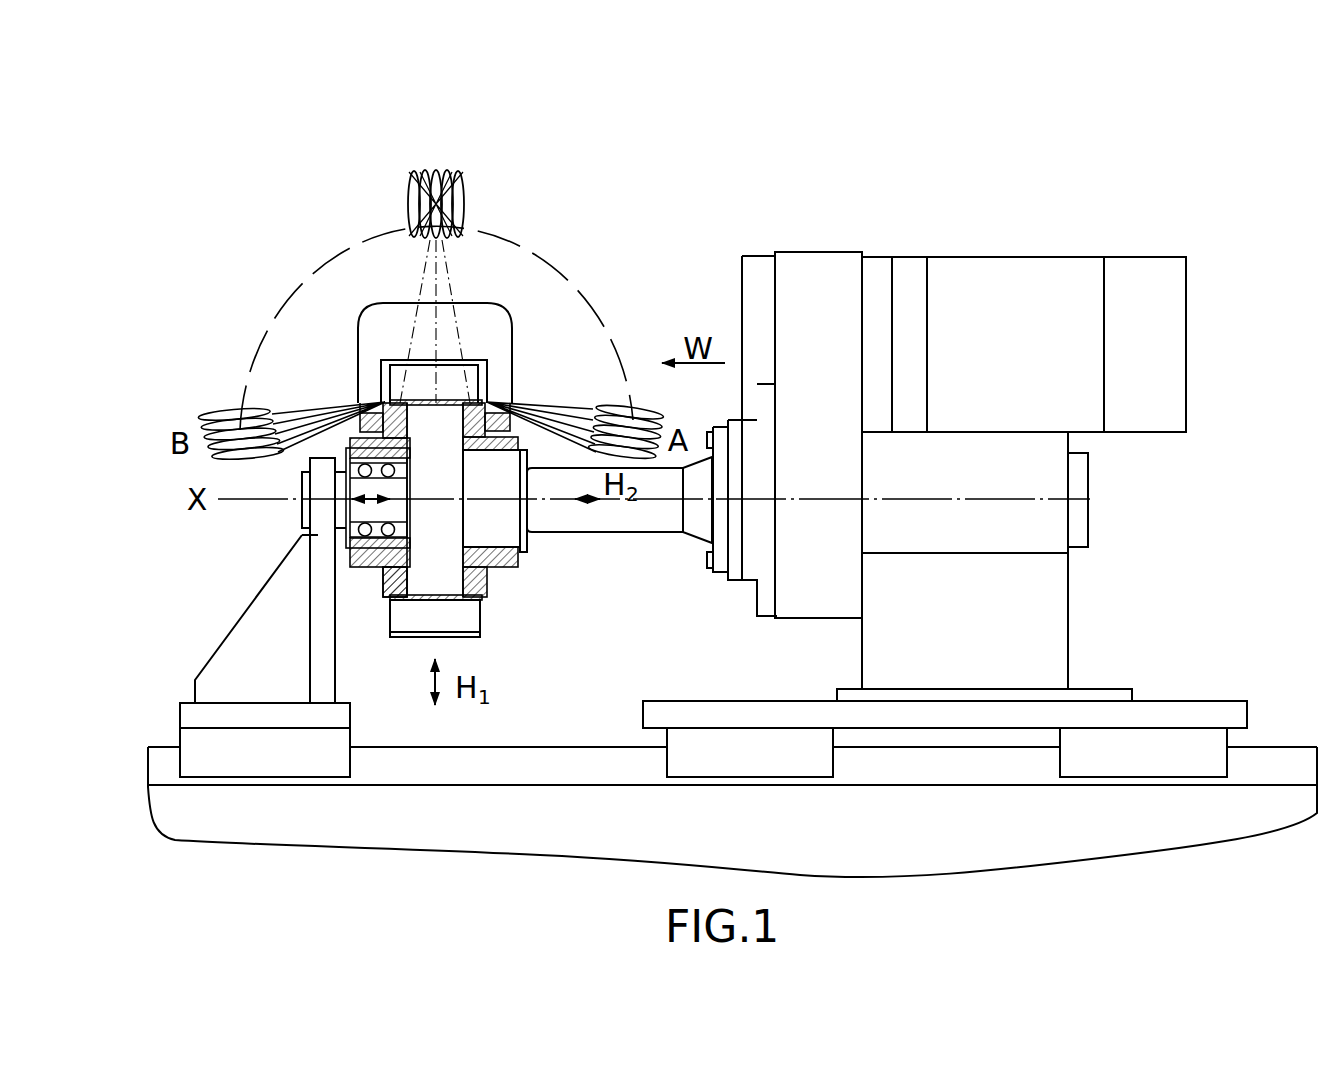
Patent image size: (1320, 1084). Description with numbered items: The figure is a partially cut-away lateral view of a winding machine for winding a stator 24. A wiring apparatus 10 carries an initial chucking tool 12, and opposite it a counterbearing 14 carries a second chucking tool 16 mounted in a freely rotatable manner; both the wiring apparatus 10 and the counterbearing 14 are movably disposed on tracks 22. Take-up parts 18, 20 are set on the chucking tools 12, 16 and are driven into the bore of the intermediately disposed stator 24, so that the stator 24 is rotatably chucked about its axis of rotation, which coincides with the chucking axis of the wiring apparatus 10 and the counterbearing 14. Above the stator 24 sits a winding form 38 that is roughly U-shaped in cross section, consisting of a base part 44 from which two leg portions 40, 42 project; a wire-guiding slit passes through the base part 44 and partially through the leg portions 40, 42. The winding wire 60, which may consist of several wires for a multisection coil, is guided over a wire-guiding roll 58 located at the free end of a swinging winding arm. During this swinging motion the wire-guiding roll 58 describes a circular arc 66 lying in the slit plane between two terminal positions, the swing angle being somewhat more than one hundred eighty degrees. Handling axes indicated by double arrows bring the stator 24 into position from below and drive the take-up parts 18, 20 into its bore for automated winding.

The wiring apparatus 10 is at (942, 220).
The initial chucking tool 12 is at (560, 523).
The counterbearing 14 is at (318, 543).
The second chucking tool 16 is at (347, 555).
The take-up part 18 is at (490, 590).
The take-up part 20 is at (388, 583).
The tracks 22 is at (925, 775).
The stator 24 is at (470, 628).
The winding form 38 is at (343, 300).
The leg portion 40 is at (510, 375).
The leg portion 42 is at (360, 375).
The base part 44 is at (500, 330).
The wire-guiding roll 58 is at (460, 188).
The winding wire 60 is at (293, 410).
The circular arc 66 is at (362, 218).